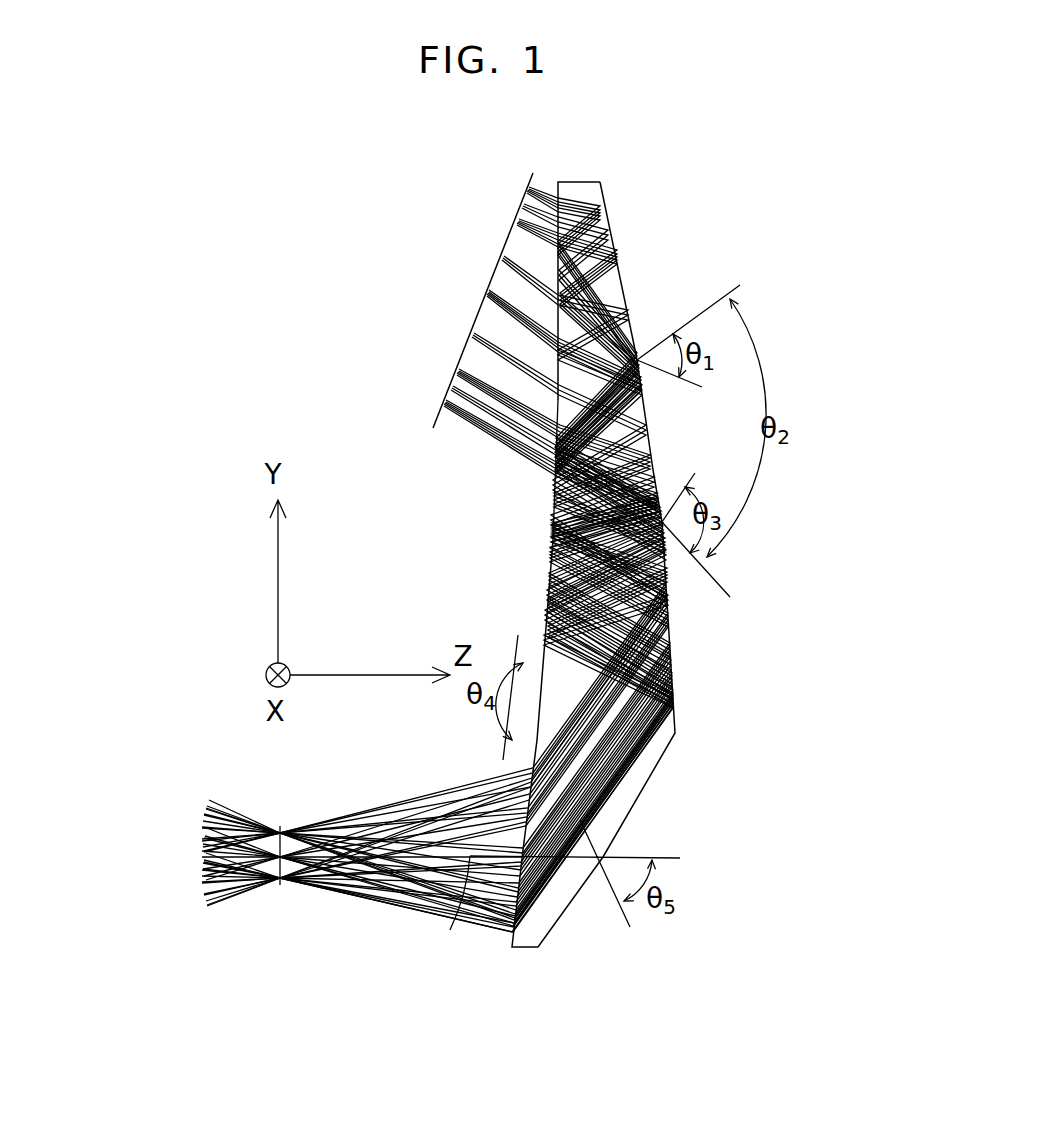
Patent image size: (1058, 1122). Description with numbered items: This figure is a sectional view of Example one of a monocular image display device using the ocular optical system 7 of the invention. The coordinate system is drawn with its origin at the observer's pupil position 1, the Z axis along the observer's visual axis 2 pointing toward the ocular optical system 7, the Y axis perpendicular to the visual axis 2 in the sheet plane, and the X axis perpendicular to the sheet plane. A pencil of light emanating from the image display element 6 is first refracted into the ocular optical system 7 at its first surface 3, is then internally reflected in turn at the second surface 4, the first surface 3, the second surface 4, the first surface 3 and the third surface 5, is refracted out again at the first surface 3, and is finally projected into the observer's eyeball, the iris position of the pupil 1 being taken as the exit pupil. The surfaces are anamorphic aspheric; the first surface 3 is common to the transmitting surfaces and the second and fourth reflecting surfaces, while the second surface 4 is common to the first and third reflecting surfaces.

The observer's pupil position 1 is at (277, 866).
The observer's visual axis 2 is at (453, 911).
The first surface of the ocular optical system 3 is at (565, 373).
The second surface of the ocular optical system 4 is at (627, 287).
The third surface of the ocular optical system 5 is at (653, 778).
The image display element 6 is at (498, 262).
The ocular optical system 7 is at (600, 182).